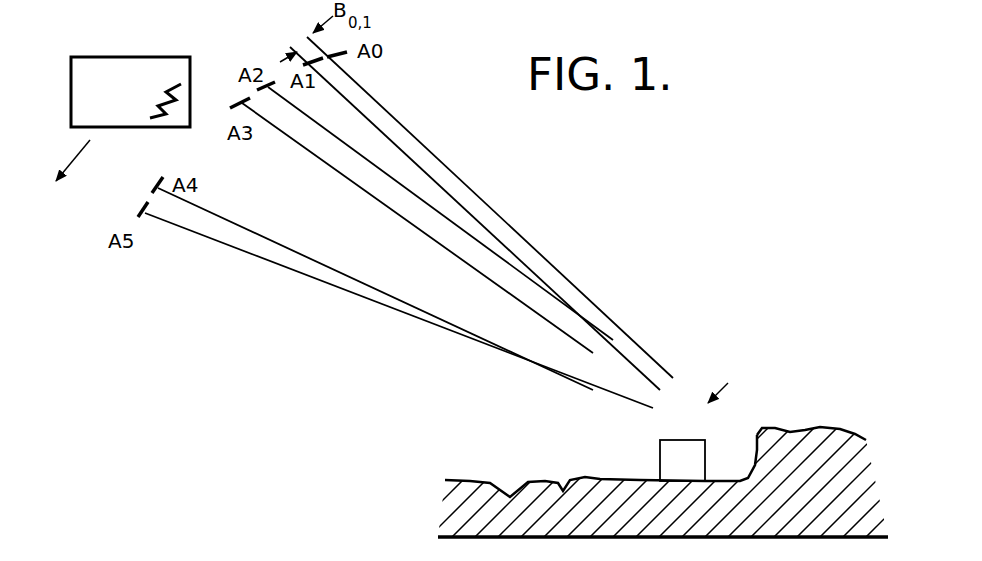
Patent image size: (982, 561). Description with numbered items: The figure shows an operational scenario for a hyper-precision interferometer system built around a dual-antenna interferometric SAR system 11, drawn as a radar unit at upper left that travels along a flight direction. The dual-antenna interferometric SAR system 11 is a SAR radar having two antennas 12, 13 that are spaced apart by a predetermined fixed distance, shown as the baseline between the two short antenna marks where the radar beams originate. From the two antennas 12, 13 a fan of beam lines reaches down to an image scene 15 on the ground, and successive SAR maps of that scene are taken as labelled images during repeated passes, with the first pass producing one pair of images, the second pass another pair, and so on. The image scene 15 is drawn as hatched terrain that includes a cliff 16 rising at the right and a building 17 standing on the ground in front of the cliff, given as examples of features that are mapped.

The dual-antenna interferometric SAR system 11 is at (190, 56).
The antenna 12 is at (182, 85).
The antenna 13 is at (150, 120).
The image scene 15 is at (572, 423).
The cliff 16 is at (775, 452).
The building 17 is at (660, 438).